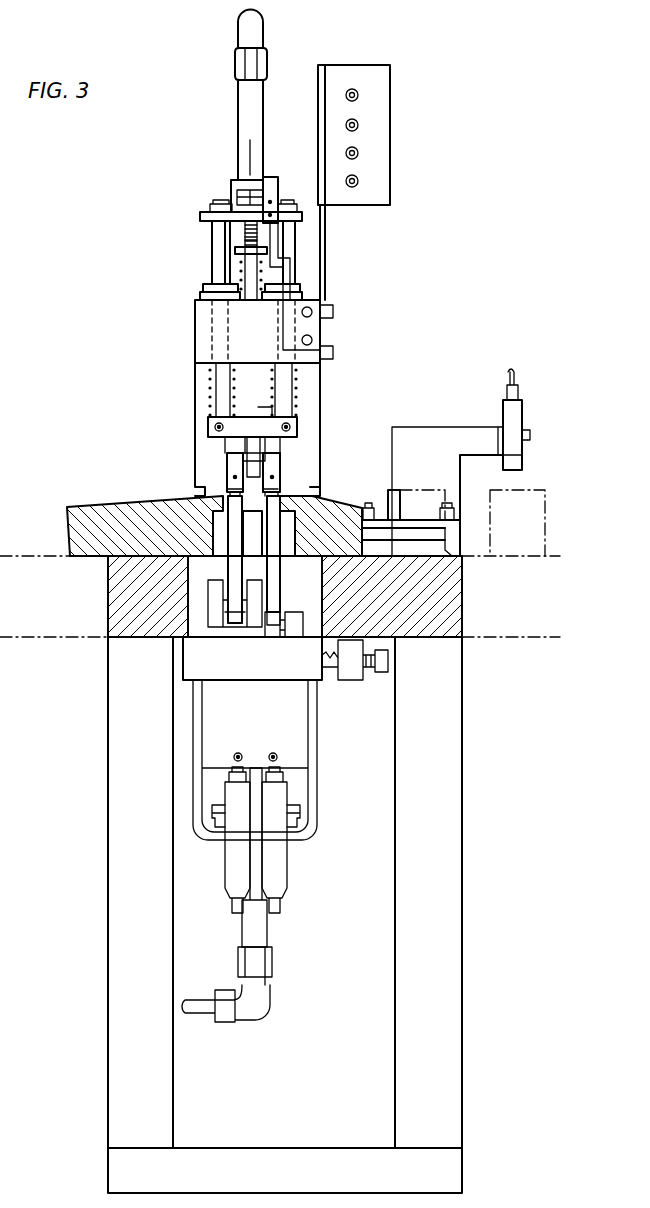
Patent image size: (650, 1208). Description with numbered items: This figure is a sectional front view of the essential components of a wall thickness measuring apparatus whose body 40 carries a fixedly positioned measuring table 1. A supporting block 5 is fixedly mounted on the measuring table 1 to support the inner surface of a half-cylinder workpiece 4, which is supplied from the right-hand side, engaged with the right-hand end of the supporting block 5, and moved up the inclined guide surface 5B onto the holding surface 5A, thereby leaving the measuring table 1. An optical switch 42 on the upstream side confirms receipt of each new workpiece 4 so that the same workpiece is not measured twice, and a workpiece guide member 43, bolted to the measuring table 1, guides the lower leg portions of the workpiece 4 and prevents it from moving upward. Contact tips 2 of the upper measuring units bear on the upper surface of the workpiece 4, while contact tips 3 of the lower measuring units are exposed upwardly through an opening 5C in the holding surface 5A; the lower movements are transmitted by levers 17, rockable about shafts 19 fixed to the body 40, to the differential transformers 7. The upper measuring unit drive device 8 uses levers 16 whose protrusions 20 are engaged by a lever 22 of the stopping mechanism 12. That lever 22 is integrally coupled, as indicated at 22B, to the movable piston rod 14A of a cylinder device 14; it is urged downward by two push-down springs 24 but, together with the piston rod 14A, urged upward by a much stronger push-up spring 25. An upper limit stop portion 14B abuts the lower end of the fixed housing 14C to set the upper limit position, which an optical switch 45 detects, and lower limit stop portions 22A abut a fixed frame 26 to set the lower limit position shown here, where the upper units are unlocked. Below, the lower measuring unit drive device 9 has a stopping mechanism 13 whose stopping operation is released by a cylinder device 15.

The measuring table 1 is at (447, 554).
The contact tips 2 is at (228, 491).
The contact tips 3 is at (275, 563).
The workpiece 4 is at (545, 494).
The supporting block 5 is at (70, 508).
The holding surface 5A is at (283, 484).
The inclined guide surface 5B is at (312, 500).
The opening 5C is at (257, 545).
The differential transformers 7 is at (228, 862).
The upper measuring unit drive device 8 is at (209, 259).
The lower measuring unit drive device 9 is at (188, 797).
The stopping mechanism 12 is at (206, 426).
The stopping mechanism 13 is at (322, 741).
The cylinder device 14 is at (243, 138).
The movable piston rod 14A is at (244, 241).
The upper limit stop portion 14B is at (237, 207).
The housing 14C is at (258, 164).
The cylinder device 15 is at (263, 932).
The levers 16 is at (227, 466).
The levers 17 is at (273, 622).
The shafts 19 is at (283, 625).
The protrusions 20 is at (241, 457).
The lever 22 is at (215, 380).
The lower limit stop portions 22A is at (300, 291).
The coupling 22B is at (203, 216).
The push-down springs 24 is at (298, 378).
The push-up spring 25 is at (262, 266).
The frame 26 is at (200, 319).
The wall thickness measuring apparatus body 40 is at (106, 775).
The optical switch 42 is at (520, 466).
The workpiece guide member 43 is at (395, 497).
The optical switch 45 is at (268, 206).